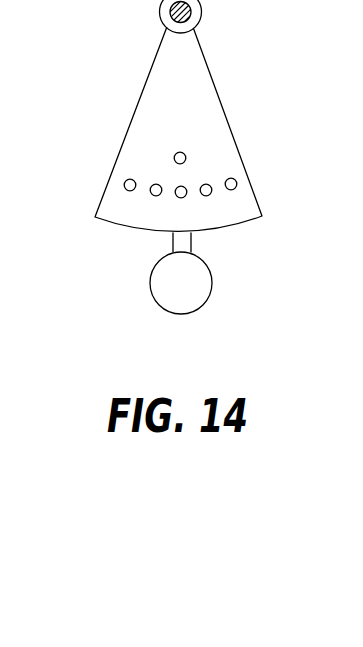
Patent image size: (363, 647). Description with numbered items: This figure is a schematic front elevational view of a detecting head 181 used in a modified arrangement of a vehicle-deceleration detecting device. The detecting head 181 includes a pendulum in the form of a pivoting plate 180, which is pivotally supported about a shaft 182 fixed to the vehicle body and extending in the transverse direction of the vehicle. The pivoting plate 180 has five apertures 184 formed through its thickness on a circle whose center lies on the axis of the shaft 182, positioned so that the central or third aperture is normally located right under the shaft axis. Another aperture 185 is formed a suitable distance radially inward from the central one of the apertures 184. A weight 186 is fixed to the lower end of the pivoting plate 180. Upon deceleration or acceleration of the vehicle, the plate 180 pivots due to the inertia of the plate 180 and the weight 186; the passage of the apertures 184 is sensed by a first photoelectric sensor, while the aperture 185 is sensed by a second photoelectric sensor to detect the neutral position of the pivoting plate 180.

The pivoting plate 180 is at (198, 90).
The detecting head 181 is at (108, 97).
The shaft 182 is at (191, 15).
The apertures 184 is at (211, 194).
The aperture 185 is at (186, 158).
The weight 186 is at (190, 290).